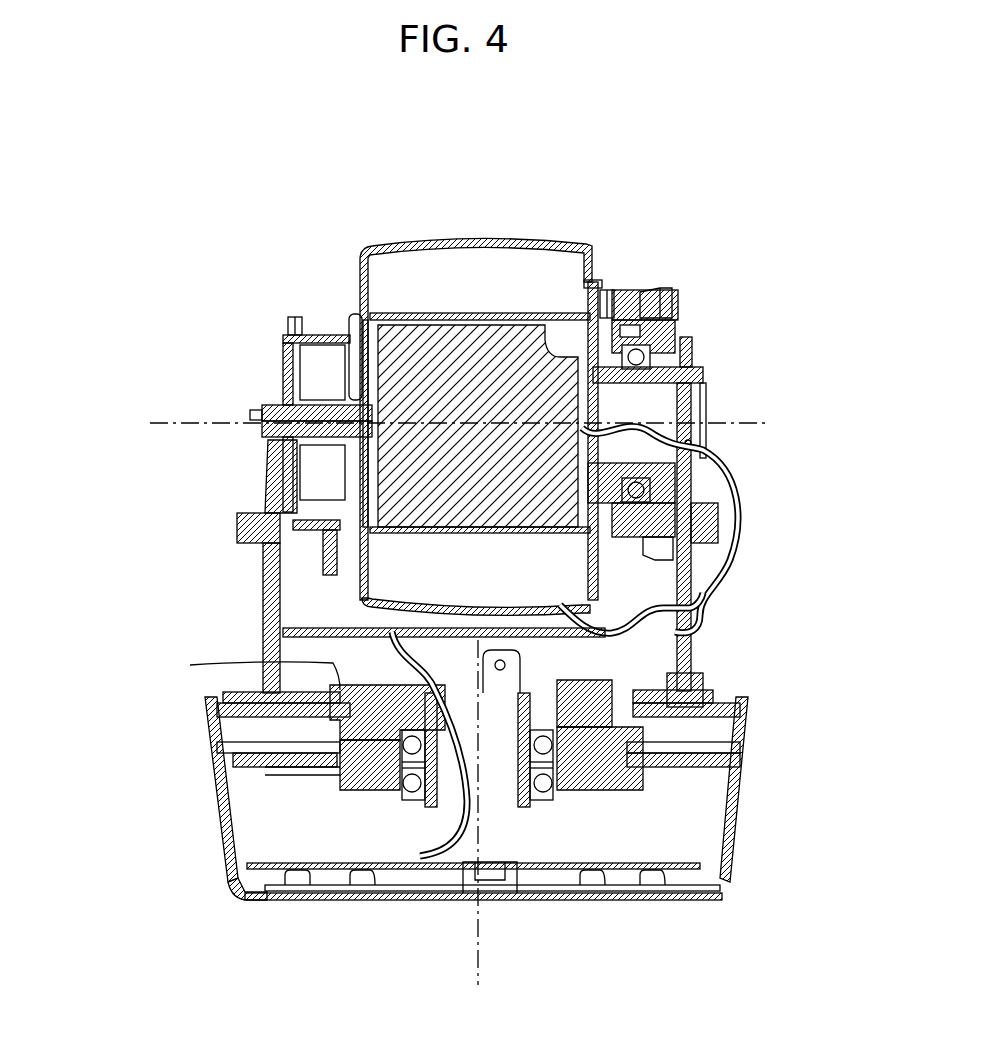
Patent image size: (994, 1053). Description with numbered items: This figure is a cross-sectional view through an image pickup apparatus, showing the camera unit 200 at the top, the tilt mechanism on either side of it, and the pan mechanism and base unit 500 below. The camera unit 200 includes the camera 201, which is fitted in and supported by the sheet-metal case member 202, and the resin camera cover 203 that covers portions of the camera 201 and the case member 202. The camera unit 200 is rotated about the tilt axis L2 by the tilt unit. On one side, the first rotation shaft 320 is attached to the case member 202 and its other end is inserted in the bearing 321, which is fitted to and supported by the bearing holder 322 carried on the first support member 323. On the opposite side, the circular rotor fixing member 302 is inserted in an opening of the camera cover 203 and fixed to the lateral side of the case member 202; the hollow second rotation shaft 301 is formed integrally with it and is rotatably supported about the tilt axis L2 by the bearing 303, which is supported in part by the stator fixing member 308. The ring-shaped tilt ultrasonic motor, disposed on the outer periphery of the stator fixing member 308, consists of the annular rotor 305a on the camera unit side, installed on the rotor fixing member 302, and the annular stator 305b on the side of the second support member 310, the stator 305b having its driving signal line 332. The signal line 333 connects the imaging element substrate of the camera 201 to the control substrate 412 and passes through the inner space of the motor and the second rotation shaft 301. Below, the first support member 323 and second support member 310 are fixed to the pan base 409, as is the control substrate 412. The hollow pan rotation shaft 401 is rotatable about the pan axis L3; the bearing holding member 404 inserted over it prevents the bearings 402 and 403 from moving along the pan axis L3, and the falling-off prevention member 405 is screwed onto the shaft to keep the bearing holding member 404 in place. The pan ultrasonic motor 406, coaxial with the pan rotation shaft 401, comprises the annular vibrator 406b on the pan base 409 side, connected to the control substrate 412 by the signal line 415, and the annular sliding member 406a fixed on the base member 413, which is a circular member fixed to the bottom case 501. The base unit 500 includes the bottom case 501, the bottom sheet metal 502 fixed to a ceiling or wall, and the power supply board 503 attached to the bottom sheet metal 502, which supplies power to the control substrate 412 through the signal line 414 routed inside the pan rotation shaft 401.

The camera unit 200 is at (480, 190).
The camera 201 is at (457, 340).
The case member 202 is at (387, 317).
The camera cover 203 is at (373, 247).
The second rotation shaft 301 is at (680, 380).
The rotor fixing member 302 is at (590, 288).
The bearing 303 is at (638, 357).
The rotor 305a is at (612, 296).
The stator 305b is at (640, 292).
The stator fixing member 308 is at (672, 312).
The second support member 310 is at (705, 523).
The first rotation shaft 320 is at (262, 412).
The bearing 321 is at (268, 432).
The bearing holder 322 is at (282, 340).
The first support member 323 is at (245, 520).
The signal line 332 is at (603, 593).
The signal line 333 is at (717, 485).
The pan rotation shaft 401 is at (412, 790).
The bearing 402 is at (545, 790).
The bearing 403 is at (575, 770).
The bearing holding member 404 is at (580, 718).
The falling-off prevention member 405 is at (410, 690).
The ultrasonic motor 406 is at (105, 725).
The sliding member 406a is at (335, 775).
The vibrator 406b is at (330, 730).
The pan base 409 is at (703, 708).
The control substrate 412 is at (360, 630).
The base member 413 is at (715, 772).
The signal line 414 is at (440, 850).
The signal line 415 is at (335, 655).
The base unit 500 is at (300, 962).
The bottom case 501 is at (262, 869).
The bottom sheet metal 502 is at (280, 900).
The power supply board 503 is at (245, 897).
The tilt axis L2 is at (476, 425).
The pan axis L3 is at (477, 828).